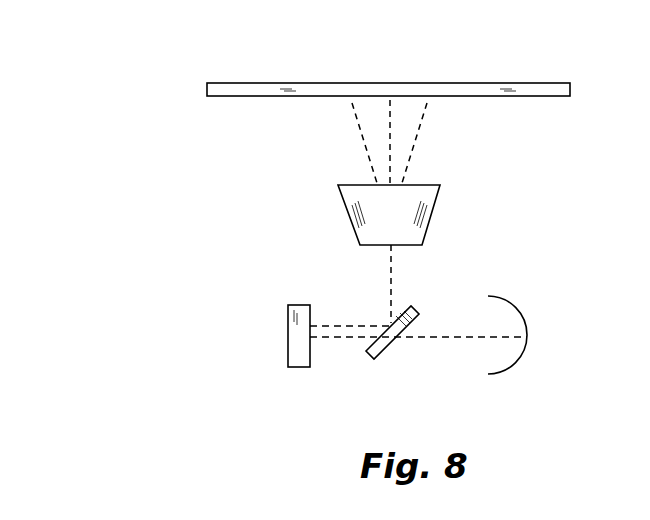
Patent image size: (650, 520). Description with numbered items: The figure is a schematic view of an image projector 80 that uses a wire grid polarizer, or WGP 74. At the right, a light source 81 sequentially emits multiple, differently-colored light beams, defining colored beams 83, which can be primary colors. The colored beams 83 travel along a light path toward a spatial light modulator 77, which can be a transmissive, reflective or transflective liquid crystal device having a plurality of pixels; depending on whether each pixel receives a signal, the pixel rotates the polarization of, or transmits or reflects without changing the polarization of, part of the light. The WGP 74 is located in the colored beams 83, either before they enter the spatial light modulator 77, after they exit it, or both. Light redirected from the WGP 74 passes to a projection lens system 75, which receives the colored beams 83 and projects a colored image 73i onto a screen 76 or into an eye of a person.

The image projector 80 is at (120, 52).
The screen 76 is at (372, 90).
The colored image 73i is at (419, 128).
The projection lens system 75 is at (403, 226).
The WGP 74 is at (375, 357).
The spatial light modulator 77 is at (300, 360).
The light source 81 is at (528, 333).
The colored beams 83 is at (452, 338).